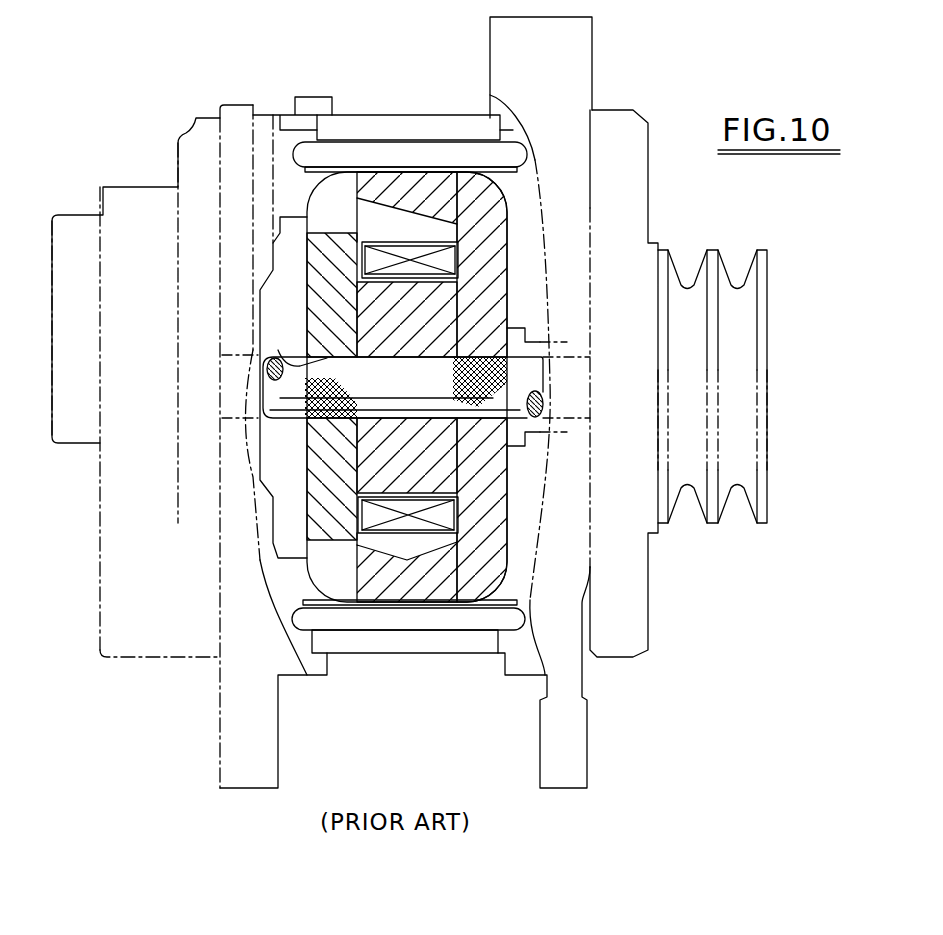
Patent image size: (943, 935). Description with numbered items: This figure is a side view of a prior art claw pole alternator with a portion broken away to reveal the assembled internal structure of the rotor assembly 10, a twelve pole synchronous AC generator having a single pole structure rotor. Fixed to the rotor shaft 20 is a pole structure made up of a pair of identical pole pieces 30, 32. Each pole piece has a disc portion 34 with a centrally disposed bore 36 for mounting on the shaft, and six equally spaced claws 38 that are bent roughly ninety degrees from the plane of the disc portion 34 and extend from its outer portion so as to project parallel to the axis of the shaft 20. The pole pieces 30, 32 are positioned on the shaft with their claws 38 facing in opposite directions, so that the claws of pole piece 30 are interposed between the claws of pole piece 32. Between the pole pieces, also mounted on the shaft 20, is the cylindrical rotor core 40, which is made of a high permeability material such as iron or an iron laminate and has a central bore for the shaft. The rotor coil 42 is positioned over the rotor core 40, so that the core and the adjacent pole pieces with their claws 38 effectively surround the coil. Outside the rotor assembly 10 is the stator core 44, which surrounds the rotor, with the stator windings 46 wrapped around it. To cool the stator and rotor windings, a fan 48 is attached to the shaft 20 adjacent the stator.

The rotor assembly 10 is at (290, 430).
The rotor shaft 20 is at (424, 389).
The pole piece 30 is at (310, 198).
The pole piece 32 is at (508, 239).
The disc portion 34 is at (313, 262).
The bore 36 is at (292, 362).
The claws 38 is at (410, 177).
The rotor core 40 is at (452, 473).
The rotor coil 42 is at (396, 248).
The stator core 44 is at (343, 648).
The stator windings 46 is at (468, 618).
The fan 48 is at (640, 637).